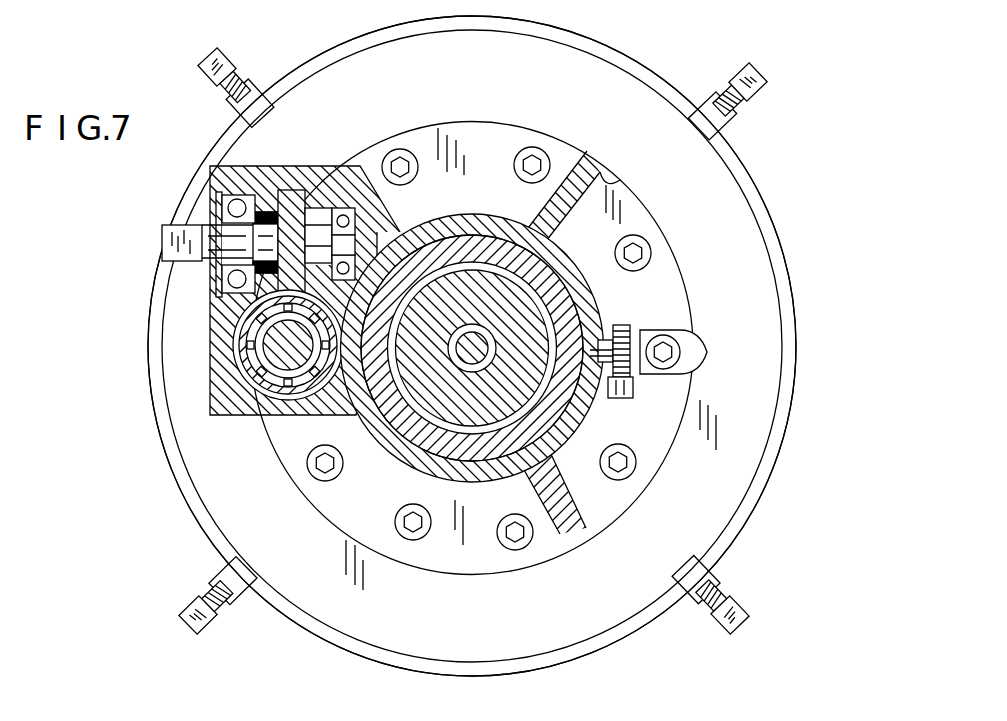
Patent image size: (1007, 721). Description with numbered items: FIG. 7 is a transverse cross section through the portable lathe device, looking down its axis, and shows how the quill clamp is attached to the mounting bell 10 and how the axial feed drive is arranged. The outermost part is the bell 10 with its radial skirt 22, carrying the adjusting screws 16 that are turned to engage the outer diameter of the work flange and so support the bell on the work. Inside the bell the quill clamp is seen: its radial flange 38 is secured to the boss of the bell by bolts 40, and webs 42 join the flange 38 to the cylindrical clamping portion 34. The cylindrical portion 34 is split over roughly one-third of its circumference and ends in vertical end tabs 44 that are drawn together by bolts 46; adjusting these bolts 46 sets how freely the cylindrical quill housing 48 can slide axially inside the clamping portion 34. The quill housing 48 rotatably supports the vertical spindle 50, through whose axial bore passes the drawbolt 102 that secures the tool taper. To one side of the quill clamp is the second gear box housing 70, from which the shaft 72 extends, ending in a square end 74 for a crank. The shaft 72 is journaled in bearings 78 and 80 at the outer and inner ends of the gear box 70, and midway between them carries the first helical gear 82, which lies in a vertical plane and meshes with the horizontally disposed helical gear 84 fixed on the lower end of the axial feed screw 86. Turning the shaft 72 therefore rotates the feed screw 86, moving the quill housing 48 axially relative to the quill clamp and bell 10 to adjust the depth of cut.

The mounting bell 10 is at (761, 196).
The radial skirt 22 is at (393, 26).
The adjusting screws 16 is at (235, 60).
The radial flange 38 is at (458, 123).
The bolts 40 is at (398, 148).
The webs 42 is at (601, 180).
The cylindrical clamping portion 34 is at (488, 213).
The quill housing 48 is at (403, 436).
The spindle 50 is at (543, 303).
The drawbolt 102 is at (492, 345).
The end tabs 44 is at (713, 350).
The bolts 46 is at (628, 399).
The second gear box housing 70 is at (278, 168).
The shaft 72 is at (215, 235).
The square end 74 is at (161, 240).
The bearing 78 is at (238, 197).
The bearing 80 is at (343, 208).
The first helical gear 82 is at (292, 190).
The helical gear 84 is at (250, 352).
The axial feed screw 86 is at (280, 362).